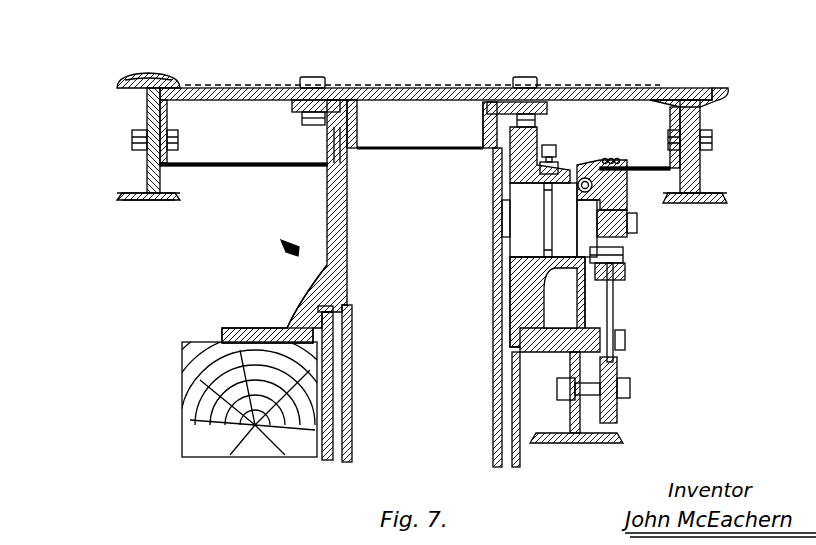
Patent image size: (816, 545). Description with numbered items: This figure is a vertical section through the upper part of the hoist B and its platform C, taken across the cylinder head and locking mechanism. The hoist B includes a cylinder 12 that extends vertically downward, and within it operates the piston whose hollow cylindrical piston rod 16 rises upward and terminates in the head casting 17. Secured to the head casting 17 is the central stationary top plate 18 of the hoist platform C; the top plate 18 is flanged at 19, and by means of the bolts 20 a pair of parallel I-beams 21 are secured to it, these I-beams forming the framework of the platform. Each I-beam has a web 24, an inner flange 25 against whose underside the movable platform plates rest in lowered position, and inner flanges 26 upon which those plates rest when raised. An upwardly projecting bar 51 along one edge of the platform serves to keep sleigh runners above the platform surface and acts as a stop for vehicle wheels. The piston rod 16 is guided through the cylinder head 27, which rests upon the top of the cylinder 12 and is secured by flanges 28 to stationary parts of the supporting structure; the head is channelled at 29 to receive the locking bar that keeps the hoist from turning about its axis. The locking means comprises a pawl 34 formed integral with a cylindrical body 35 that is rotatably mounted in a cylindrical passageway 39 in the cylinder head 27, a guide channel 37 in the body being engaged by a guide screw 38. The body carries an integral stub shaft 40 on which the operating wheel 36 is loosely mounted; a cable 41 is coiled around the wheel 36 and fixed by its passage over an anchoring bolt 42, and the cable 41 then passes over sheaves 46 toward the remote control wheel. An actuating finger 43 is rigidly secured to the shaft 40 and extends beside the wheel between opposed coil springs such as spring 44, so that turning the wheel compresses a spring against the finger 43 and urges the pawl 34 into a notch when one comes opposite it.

The cylinder 12 is at (357, 338).
The piston rod 16 is at (325, 232).
The head casting 17 is at (333, 100).
The top plate 18 is at (265, 88).
The flange 19 is at (168, 120).
The bolts 20 is at (131, 140).
The I-beams 21 is at (155, 200).
The webs 24 is at (150, 175).
The inner flange 25 is at (135, 89).
The inner flanges 26 is at (127, 193).
The cylinder head 27 is at (324, 268).
The flanges 28 is at (243, 328).
The channel 29 is at (500, 190).
The pawl 34 is at (502, 218).
The cylindrical body 35 is at (540, 240).
The operating wheel 36 is at (627, 270).
The guide channel 37 is at (548, 205).
The guide screw 38 is at (548, 162).
The cylindrical passageway 39 is at (545, 283).
The stub shaft 40 is at (615, 222).
The cable 41 is at (613, 308).
The anchoring bolt 42 is at (623, 257).
The actuating finger 43 is at (592, 197).
The coil spring 44 is at (585, 177).
The sheaves 46 is at (615, 408).
The bar 51 is at (152, 73).
The hoist B is at (402, 172).
The hoist platform C is at (497, 92).